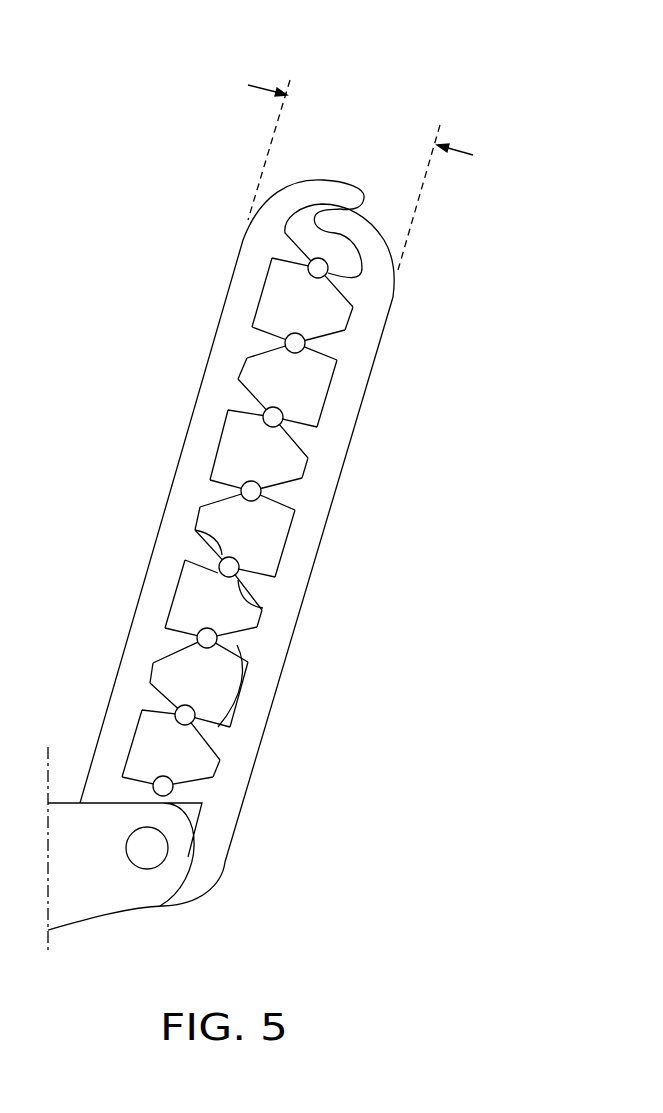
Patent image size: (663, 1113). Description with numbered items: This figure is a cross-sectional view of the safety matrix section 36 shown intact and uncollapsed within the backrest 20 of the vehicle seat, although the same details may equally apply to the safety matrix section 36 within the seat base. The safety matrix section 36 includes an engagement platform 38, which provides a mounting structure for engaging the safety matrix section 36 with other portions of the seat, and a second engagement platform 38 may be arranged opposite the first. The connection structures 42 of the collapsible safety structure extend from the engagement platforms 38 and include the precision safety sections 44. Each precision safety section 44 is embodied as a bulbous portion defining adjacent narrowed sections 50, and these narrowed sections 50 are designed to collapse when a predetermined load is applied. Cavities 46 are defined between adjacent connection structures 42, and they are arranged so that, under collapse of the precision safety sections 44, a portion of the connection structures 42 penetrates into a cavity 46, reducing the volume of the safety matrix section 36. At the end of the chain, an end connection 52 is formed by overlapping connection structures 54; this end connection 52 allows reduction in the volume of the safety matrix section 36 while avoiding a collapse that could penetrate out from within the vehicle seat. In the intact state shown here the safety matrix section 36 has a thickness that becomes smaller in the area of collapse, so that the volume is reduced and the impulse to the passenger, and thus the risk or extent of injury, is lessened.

The backrest 20 is at (420, 108).
The safety matrix section 36 is at (494, 246).
The engagement platform 38 is at (191, 418).
The connection structures 42 is at (160, 708).
The precision safety sections 44 is at (205, 630).
The cavities 46 is at (250, 372).
The narrowed sections 50 is at (195, 530).
The end connection 52 is at (343, 108).
The overlapping connection structures 54 is at (292, 195).